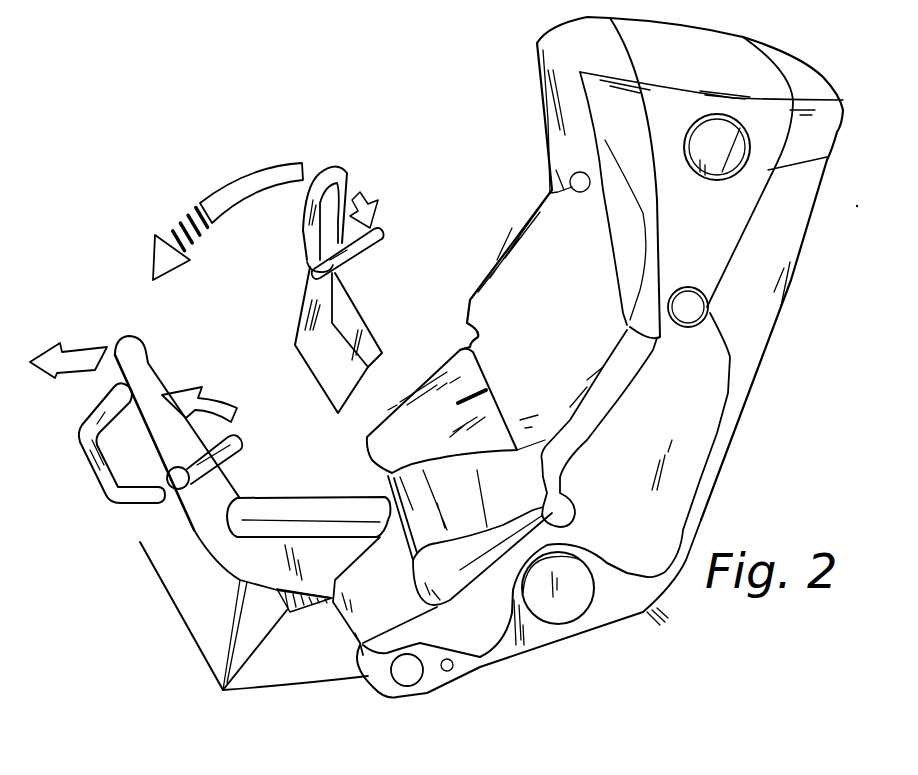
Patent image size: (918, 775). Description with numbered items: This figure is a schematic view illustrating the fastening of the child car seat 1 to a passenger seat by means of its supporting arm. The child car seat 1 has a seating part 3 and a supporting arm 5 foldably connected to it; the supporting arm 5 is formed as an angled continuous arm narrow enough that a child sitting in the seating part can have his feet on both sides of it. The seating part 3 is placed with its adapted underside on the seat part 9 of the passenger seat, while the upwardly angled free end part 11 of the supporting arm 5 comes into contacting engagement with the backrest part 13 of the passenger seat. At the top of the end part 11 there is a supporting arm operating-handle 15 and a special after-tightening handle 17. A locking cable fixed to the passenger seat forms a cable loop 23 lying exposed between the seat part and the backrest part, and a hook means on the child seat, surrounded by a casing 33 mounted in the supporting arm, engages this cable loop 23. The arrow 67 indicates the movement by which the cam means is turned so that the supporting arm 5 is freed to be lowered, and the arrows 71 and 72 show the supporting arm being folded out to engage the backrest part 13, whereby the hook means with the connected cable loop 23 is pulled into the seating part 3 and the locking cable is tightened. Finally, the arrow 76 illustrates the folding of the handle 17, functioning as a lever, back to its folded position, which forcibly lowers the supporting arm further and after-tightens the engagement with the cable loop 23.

The child car seat 1 is at (543, 270).
The seating part 3 is at (667, 428).
The supporting arm 5 is at (210, 540).
The seat part 9 is at (637, 610).
The free end part 11 is at (115, 510).
The backrest part 13 is at (203, 620).
The supporting arm operating-handle 15 is at (158, 453).
The after-tightening handle 17 is at (238, 445).
The cable loop 23 is at (260, 643).
The casing 33 is at (300, 607).
The arrow 67 is at (370, 203).
The arrow 71 is at (248, 183).
The arrow 72 is at (92, 340).
The arrow 76 is at (212, 403).